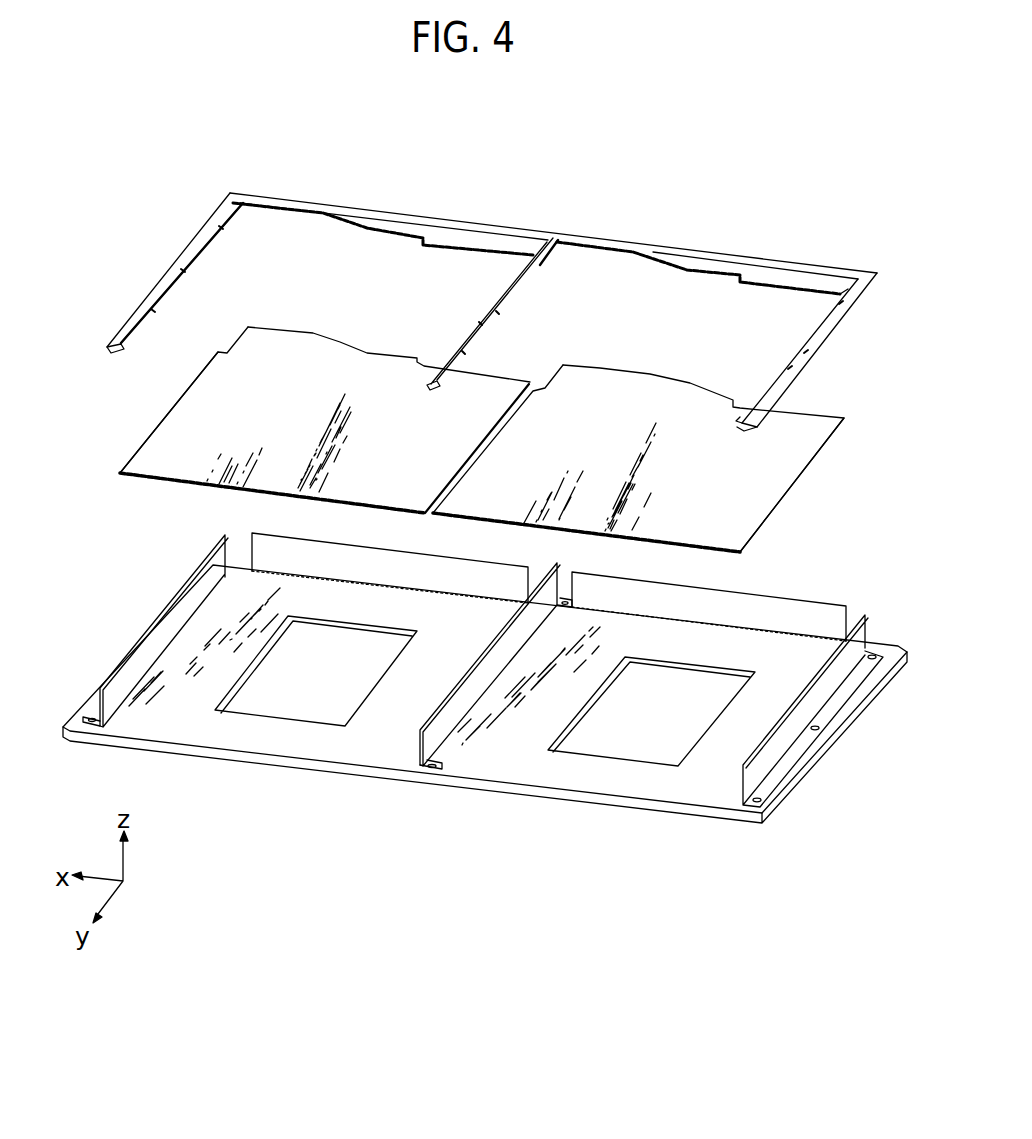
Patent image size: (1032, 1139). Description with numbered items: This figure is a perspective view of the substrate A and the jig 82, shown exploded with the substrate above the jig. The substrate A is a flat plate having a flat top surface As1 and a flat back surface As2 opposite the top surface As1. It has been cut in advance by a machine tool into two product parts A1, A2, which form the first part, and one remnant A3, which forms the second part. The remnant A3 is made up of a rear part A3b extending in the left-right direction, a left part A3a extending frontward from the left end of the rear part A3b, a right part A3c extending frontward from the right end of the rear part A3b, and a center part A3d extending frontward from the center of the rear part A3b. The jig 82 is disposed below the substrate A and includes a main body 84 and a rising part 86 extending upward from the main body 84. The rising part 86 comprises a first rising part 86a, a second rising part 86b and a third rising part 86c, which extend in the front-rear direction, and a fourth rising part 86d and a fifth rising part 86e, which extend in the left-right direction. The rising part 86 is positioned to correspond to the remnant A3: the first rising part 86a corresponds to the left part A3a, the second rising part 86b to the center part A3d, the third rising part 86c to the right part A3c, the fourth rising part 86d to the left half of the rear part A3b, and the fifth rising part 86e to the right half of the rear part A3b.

The substrate A is at (183, 160).
The product part A1 is at (340, 372).
The product part A2 is at (676, 412).
The remnant A3 is at (437, 210).
The left part A3a is at (183, 258).
The rear part A3b is at (582, 236).
The right part A3c is at (835, 324).
The center part A3d is at (512, 300).
The top surface As1 is at (856, 447).
The back surface As2 is at (766, 572).
The jig 82 is at (723, 870).
The main body 84 is at (503, 765).
The rising part 86 is at (835, 592).
The first rising part 86a is at (117, 667).
The second rising part 86b is at (453, 688).
The third rising part 86c is at (768, 754).
The fourth rising part 86d is at (388, 542).
The fifth rising part 86e is at (592, 576).